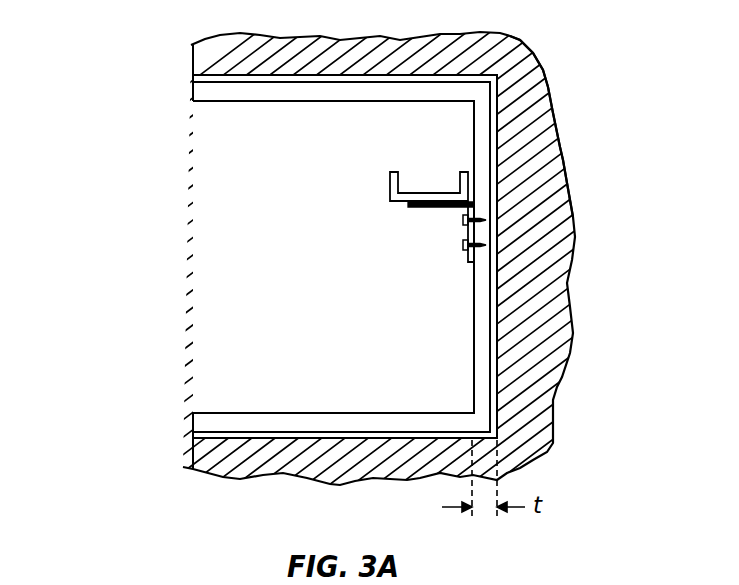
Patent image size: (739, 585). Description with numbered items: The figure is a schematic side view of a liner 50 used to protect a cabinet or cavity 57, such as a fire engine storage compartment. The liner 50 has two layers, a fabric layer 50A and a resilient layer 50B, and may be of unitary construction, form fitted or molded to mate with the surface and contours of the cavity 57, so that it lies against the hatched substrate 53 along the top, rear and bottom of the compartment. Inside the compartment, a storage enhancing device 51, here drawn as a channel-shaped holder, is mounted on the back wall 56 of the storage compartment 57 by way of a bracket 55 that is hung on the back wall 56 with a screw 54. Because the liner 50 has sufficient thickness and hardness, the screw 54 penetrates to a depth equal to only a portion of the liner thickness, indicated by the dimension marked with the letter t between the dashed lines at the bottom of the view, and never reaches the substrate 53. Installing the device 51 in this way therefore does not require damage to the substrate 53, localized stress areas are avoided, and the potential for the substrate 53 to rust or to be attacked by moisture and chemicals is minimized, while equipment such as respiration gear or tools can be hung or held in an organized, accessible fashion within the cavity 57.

The substrate 53 is at (193, 58).
The cavity 57 is at (566, 79).
The liner 50 is at (184, 413).
The fabric layer 50A is at (193, 79).
The resilient layer 50B is at (193, 94).
The back wall 56 is at (468, 138).
The storage enhancing device 51 is at (421, 207).
The bracket 55 is at (455, 210).
The screw 54 is at (463, 247).